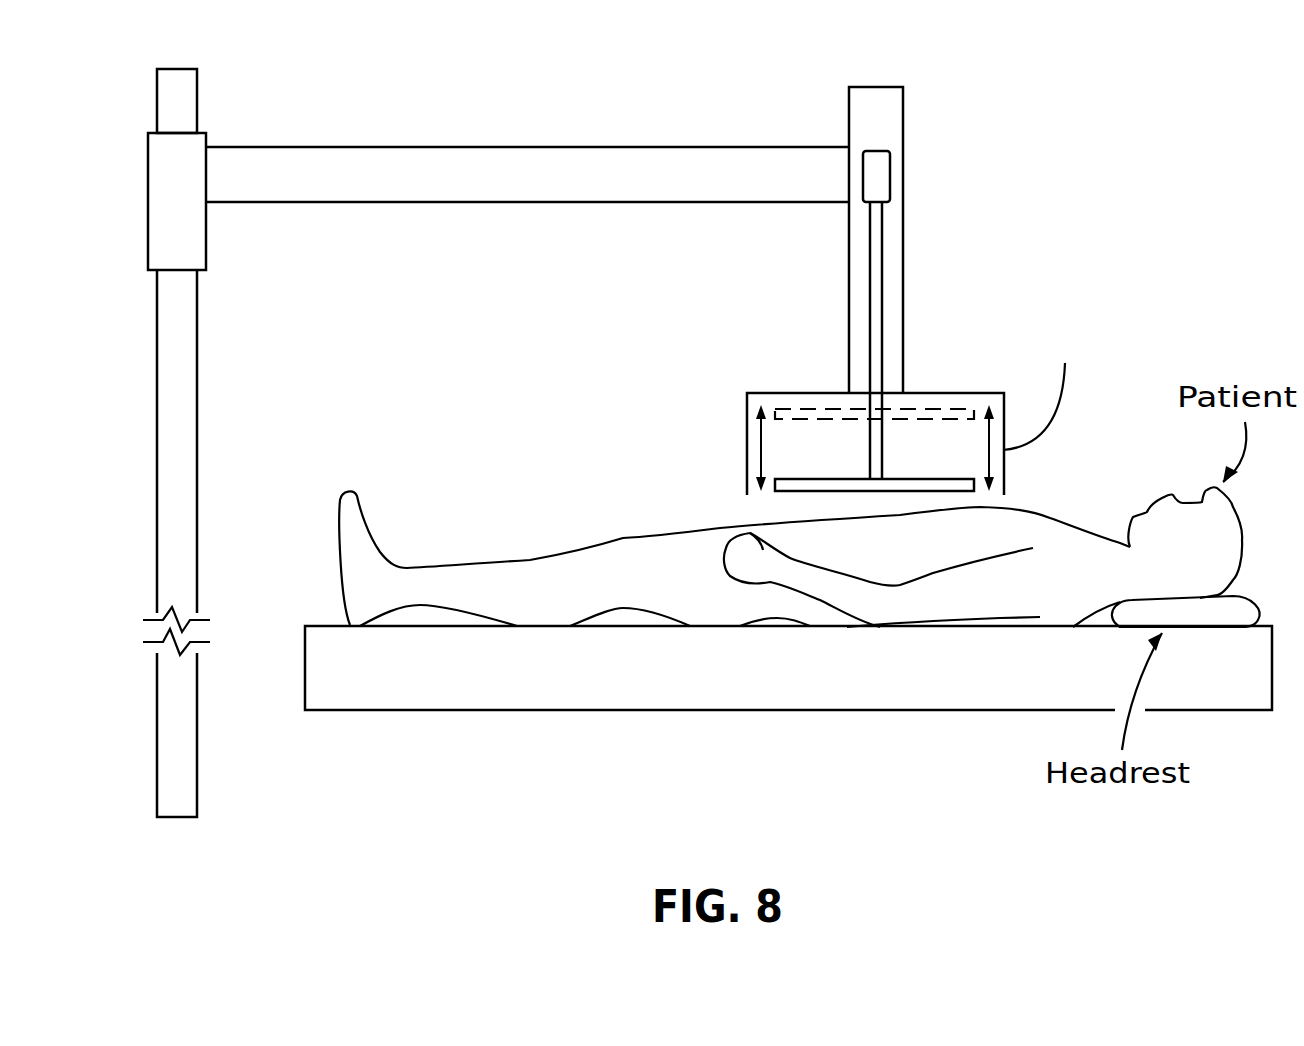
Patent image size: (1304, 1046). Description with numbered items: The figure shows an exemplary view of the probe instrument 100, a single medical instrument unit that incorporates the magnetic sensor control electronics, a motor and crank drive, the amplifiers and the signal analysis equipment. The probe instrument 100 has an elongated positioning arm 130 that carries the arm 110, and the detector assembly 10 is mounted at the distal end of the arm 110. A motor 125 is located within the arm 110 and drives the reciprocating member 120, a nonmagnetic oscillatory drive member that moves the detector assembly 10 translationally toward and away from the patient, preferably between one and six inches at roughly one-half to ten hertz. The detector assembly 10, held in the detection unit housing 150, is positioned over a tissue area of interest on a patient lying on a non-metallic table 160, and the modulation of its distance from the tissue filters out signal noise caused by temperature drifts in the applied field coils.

The probe instrument 100 is at (583, 103).
The elongated positioning arm 130 is at (378, 147).
The arm 110 is at (902, 120).
The motor 125 is at (890, 175).
The reciprocating member 120 is at (870, 242).
The detection unit housing 150 is at (747, 455).
The detector assembly 10 is at (835, 407).
The patient table 160 is at (683, 710).